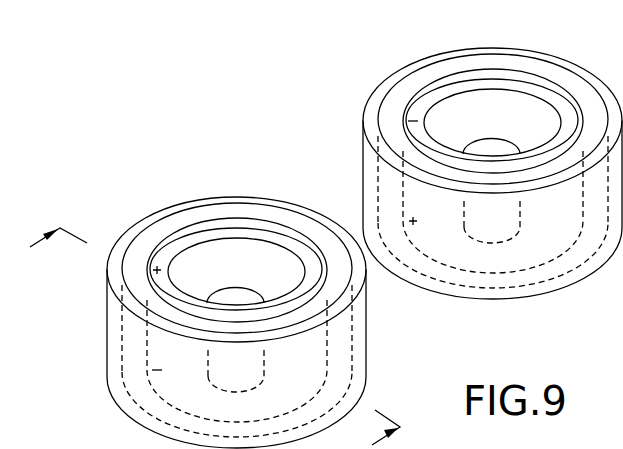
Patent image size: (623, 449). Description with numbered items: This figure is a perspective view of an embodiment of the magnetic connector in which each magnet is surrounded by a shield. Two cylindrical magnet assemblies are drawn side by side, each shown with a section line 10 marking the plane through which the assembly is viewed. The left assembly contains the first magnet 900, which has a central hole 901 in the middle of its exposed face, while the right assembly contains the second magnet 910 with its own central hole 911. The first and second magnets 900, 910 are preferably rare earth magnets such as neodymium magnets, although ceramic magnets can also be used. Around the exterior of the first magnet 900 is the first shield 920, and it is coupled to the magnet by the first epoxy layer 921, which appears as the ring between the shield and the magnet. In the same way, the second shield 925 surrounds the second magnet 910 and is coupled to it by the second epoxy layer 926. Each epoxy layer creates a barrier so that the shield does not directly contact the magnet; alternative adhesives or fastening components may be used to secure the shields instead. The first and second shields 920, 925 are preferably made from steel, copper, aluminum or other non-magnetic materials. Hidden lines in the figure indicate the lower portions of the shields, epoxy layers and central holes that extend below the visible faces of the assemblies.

The section line 10 is at (230, 327).
The first magnet 900 is at (192, 235).
The central hole 901 is at (250, 293).
The second magnet 910 is at (480, 75).
The central hole 911 is at (510, 143).
The first shield 920 is at (107, 315).
The first epoxy layer 921 is at (327, 250).
The second shield 925 is at (366, 163).
The second epoxy layer 926 is at (395, 117).